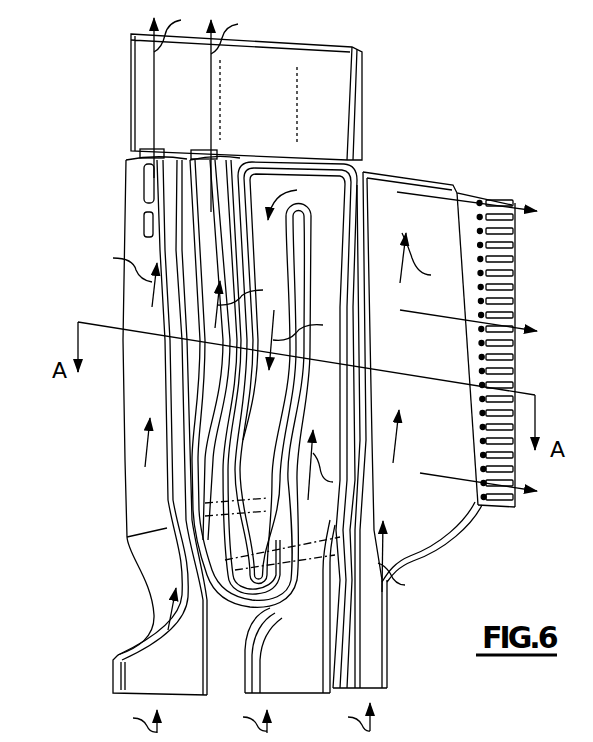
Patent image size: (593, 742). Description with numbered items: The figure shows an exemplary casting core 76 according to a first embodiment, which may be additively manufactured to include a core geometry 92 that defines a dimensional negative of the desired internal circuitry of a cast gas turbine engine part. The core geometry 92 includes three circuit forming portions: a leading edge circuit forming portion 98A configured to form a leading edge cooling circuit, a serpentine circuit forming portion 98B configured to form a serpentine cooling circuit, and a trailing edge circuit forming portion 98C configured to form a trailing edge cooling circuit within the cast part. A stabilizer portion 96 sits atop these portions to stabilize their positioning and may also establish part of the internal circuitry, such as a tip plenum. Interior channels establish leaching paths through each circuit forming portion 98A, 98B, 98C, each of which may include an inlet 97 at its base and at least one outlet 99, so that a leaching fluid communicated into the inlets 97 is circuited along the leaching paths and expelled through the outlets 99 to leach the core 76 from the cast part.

The casting core 76 is at (296, 373).
The core geometry 92 is at (296, 423).
The stabilizer portion 96 is at (128, 70).
The inlet 97 is at (165, 695).
The leading edge circuit forming portion 98A is at (133, 320).
The serpentine circuit forming portion 98B is at (290, 167).
The trailing edge circuit forming portion 98C is at (423, 522).
The outlet 99 is at (543, 521).